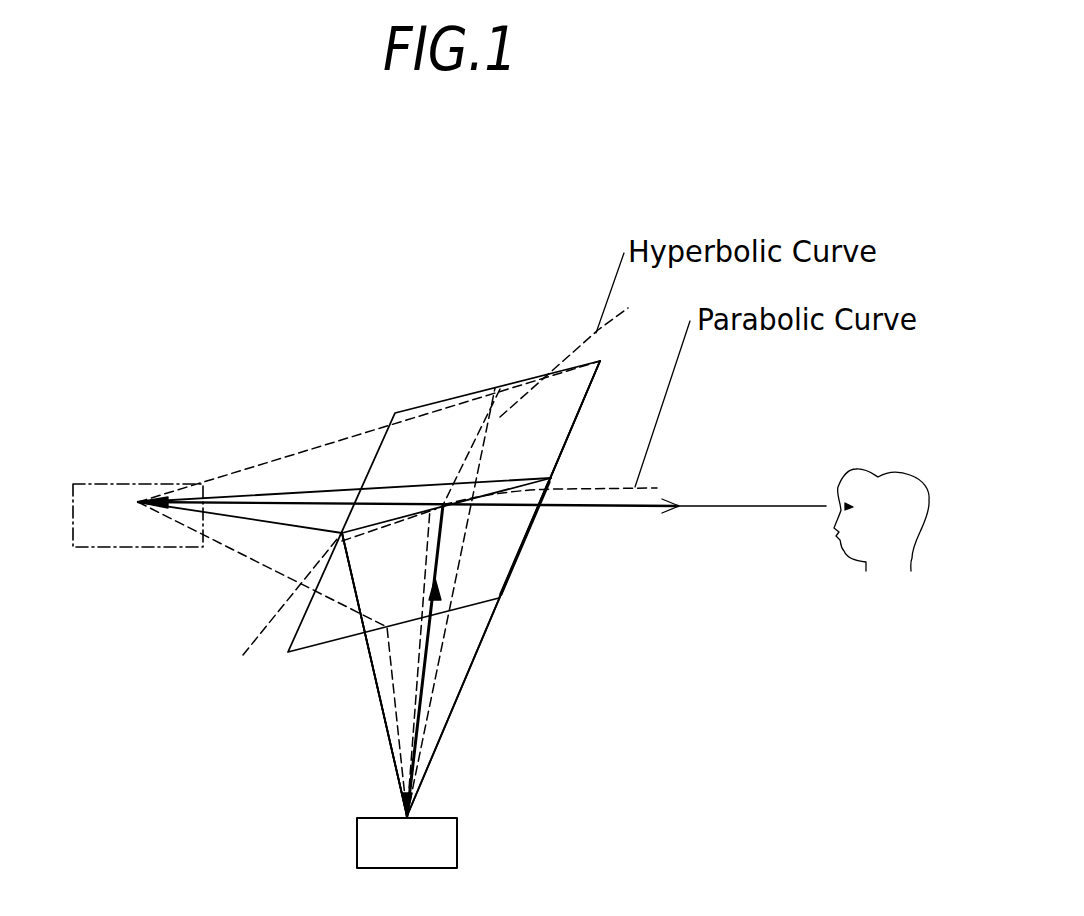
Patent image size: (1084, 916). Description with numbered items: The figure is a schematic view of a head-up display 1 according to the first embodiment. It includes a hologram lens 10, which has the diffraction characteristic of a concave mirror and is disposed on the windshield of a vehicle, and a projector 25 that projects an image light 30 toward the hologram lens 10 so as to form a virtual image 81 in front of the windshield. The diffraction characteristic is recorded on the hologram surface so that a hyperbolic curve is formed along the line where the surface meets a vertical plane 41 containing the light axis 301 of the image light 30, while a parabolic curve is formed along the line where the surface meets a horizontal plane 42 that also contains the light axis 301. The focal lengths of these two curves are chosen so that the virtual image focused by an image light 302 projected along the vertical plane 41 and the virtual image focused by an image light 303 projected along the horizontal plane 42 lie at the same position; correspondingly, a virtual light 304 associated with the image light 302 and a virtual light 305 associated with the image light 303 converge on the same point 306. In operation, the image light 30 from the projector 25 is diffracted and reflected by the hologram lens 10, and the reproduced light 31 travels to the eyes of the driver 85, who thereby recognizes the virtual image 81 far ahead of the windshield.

The head-up display 1 is at (423, 350).
The hologram lens 10 is at (542, 377).
The projector 25 is at (458, 847).
The image light 30 is at (437, 802).
The light axis 301 is at (428, 643).
The image light 302 is at (440, 672).
The image light 303 is at (452, 717).
The reproduced light 31 is at (726, 503).
The vertical plane 41 is at (468, 538).
The horizontal plane 42 is at (378, 700).
The virtual image 81 is at (123, 483).
The driver 85 is at (878, 470).
The virtual light 304 is at (317, 445).
The virtual light 305 is at (235, 523).
The point 306 is at (143, 500).